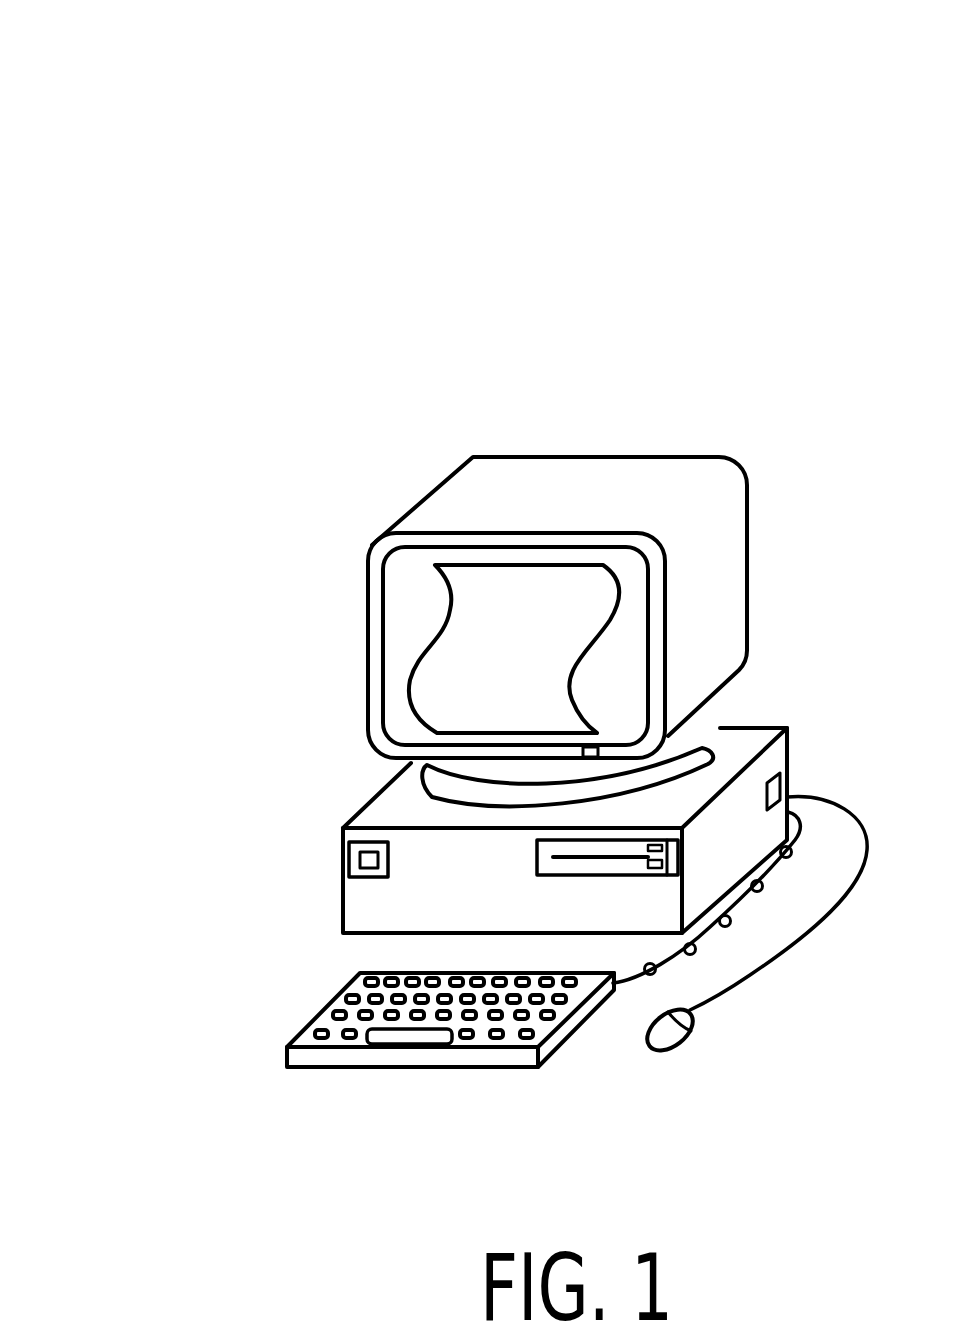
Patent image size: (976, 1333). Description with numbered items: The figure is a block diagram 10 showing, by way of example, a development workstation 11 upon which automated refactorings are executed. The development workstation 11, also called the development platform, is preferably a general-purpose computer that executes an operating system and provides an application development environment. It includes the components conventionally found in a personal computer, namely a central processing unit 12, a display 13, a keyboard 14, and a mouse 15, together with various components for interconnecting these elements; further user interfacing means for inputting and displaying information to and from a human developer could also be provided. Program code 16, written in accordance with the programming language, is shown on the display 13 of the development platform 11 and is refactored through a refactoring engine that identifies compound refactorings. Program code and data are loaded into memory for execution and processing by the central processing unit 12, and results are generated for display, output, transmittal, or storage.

The block diagram 10 is at (97, 113).
The development workstation 11 is at (347, 468).
The central processing unit 12 is at (343, 877).
The display 13 is at (624, 456).
The keyboard 14 is at (290, 1047).
The mouse 15 is at (697, 1027).
The program code 16 is at (412, 684).